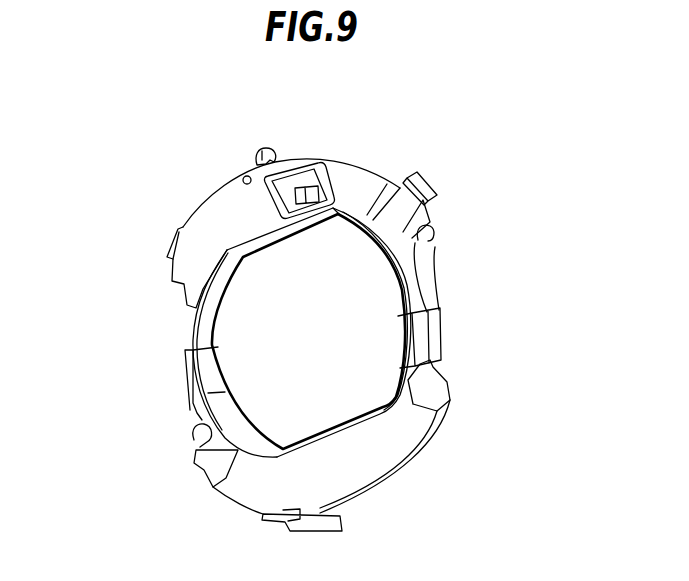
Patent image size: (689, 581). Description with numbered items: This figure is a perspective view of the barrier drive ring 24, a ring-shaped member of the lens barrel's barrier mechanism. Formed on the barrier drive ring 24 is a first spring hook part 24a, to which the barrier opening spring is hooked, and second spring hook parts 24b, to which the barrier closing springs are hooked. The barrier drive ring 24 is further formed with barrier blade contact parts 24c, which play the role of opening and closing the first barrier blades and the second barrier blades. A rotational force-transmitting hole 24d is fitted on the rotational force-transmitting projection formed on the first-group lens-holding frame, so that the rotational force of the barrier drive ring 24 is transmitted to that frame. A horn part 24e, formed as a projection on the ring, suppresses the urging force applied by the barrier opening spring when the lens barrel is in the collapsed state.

The barrier drive ring 24 is at (413, 423).
The first spring hook part 24a is at (270, 150).
The second spring hook parts 24b is at (437, 237).
The barrier blade contact parts 24c is at (430, 314).
The rotational force-transmitting hole 24d is at (307, 188).
The horn part 24e is at (337, 528).